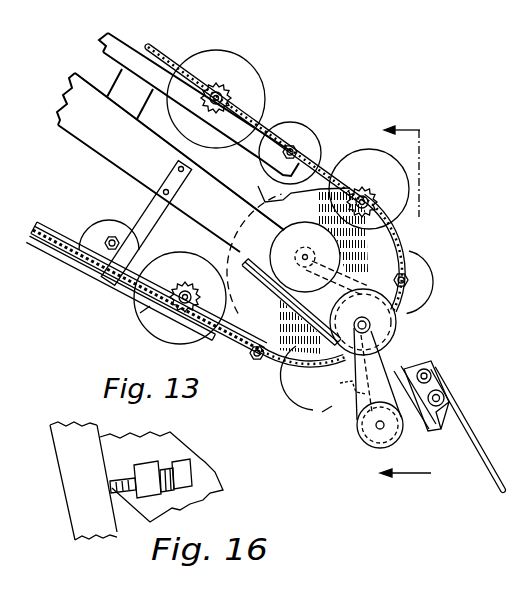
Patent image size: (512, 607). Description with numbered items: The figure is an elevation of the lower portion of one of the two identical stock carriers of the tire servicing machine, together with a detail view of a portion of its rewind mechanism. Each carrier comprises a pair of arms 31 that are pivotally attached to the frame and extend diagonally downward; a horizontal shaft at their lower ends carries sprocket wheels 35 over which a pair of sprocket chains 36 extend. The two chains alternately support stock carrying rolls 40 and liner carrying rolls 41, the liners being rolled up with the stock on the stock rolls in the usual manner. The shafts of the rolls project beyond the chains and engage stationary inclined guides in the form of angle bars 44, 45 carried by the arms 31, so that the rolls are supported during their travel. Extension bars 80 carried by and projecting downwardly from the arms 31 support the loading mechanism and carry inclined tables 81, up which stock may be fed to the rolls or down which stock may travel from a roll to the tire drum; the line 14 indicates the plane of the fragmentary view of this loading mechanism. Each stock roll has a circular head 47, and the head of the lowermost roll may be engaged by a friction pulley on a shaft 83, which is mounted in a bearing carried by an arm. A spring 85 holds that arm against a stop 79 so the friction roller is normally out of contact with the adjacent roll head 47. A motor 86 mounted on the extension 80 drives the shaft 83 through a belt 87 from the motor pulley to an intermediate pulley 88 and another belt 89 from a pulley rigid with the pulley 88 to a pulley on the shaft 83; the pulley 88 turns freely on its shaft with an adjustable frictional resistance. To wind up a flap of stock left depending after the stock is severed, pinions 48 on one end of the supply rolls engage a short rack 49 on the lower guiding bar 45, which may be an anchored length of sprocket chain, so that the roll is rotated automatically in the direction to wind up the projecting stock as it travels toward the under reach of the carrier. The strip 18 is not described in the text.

In FIG. 13, the section line 14— 14 is at (418, 302).
In FIG. 16, the strip 18 is at (68, 497).
In FIG. 13, the arms 31 is at (170, 177).
In FIG. 13, the sprocket wheels 35 is at (267, 201).
In FIG. 13, the sprocket chains 36 is at (162, 57).
In FIG. 13, the stock carrying rolls 40 is at (249, 82).
In FIG. 13, the liner carrying rolls 41 is at (301, 130).
In FIG. 13, the angle bar 44 is at (180, 92).
In FIG. 13, the angle bar 45 is at (46, 216).
In FIG. 13, the circular head 47 is at (406, 224).
In FIG. 13, the pinions 48 is at (217, 84).
In FIG. 13, the short rack 49 is at (140, 313).
In FIG. 16, the stop 79 is at (166, 465).
In FIG. 13, the extension bars 80 is at (287, 297).
In FIG. 16, the extension bars 80 is at (218, 480).
In FIG. 13, the inclined tables 81 is at (464, 418).
In FIG. 13, the shaft 83 is at (377, 427).
In FIG. 13, the spring 85 is at (322, 414).
In FIG. 13, the motor 86 is at (296, 232).
In FIG. 13, the belt 87 is at (352, 281).
In FIG. 13, the intermediate pulley 88 is at (392, 323).
In FIG. 13, the belt 89 is at (348, 384).